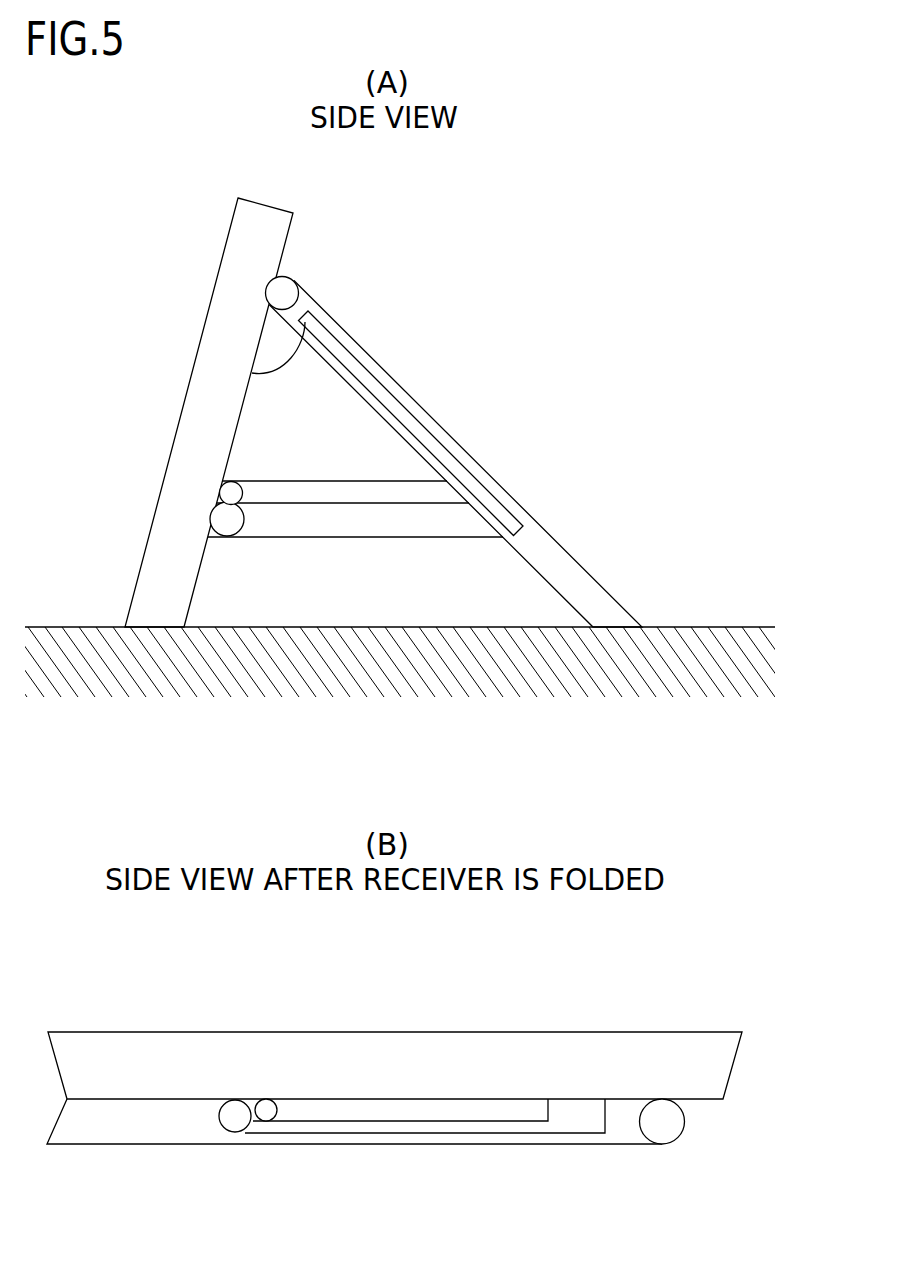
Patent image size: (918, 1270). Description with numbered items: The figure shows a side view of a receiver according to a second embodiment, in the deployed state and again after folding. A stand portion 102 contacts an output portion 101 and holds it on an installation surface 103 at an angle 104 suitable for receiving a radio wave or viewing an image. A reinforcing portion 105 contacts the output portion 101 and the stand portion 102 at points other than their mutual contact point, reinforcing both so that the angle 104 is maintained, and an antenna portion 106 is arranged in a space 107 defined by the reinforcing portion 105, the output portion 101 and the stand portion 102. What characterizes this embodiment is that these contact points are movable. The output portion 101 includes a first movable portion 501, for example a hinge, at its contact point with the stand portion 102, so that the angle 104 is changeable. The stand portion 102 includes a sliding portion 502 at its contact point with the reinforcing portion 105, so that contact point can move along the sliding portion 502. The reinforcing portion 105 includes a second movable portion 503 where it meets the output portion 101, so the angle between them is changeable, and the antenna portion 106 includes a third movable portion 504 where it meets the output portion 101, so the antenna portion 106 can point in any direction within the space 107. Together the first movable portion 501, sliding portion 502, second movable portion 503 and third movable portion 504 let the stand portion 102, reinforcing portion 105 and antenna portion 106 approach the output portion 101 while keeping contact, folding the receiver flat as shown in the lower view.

The output portion 101 is at (197, 360).
The stand portion 102 is at (572, 558).
The installation surface 103 is at (747, 627).
The angle 104 is at (303, 323).
The reinforcing portion 105 is at (333, 537).
The antenna portion 106 is at (333, 481).
The space 107 is at (367, 458).
The first movable portion 501 is at (273, 290).
The sliding portion 502 is at (397, 398).
The second movable portion 503 is at (214, 512).
The third movable portion 504 is at (229, 480).